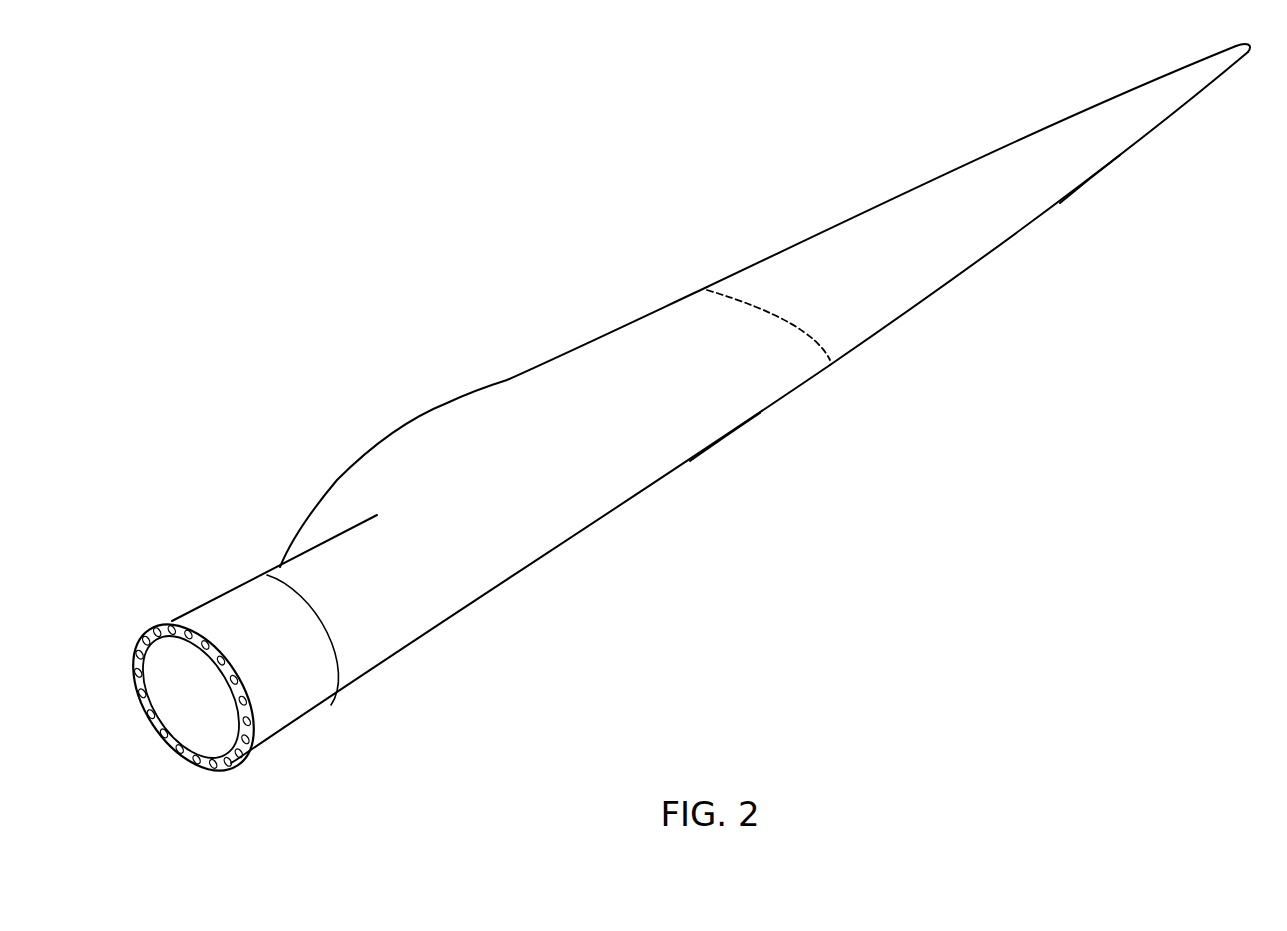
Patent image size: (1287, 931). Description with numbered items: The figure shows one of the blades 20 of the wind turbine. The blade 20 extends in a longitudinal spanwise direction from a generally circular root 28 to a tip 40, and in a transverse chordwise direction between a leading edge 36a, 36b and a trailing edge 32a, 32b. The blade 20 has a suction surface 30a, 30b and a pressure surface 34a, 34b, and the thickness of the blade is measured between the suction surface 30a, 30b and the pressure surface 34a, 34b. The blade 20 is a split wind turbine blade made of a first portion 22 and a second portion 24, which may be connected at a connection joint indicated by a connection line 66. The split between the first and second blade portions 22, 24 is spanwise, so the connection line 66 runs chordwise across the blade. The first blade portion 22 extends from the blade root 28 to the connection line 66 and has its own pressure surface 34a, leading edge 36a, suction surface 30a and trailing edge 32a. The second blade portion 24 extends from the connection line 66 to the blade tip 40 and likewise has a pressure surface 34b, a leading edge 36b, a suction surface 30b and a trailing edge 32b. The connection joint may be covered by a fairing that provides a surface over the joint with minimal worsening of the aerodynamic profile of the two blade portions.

The blade 20 is at (392, 244).
The first blade portion 22 is at (582, 374).
The second blade portion 24 is at (844, 255).
The root 28 is at (303, 703).
The suction surface 30a is at (628, 502).
The suction surface 30b is at (980, 265).
The trailing edge 32a is at (452, 403).
The trailing edge 32b is at (977, 152).
The pressure surface 34a is at (489, 504).
The pressure surface 34b is at (933, 256).
The leading edge 36a is at (707, 450).
The leading edge 36b is at (1097, 173).
The tip 40 is at (1220, 70).
The connection line 66 is at (807, 333).